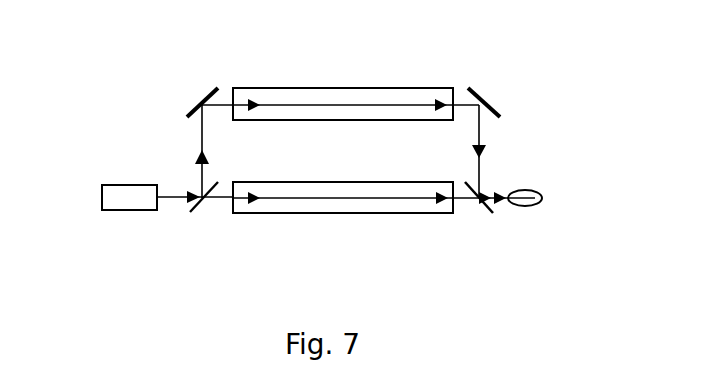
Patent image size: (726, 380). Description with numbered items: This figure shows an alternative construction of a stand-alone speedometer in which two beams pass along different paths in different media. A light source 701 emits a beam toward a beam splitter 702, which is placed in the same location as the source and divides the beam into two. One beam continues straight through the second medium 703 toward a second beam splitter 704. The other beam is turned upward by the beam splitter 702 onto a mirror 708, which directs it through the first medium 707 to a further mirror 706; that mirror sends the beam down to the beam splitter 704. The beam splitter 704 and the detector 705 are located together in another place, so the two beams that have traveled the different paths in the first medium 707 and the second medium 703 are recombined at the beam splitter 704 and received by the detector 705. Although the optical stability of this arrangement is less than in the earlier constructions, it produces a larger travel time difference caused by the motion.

The light source 701 is at (110, 192).
The beam splitter 702 is at (202, 195).
The second medium 703 is at (348, 213).
The beam splitter 704 is at (490, 215).
The detector 705 is at (537, 192).
The mirror 706 is at (480, 92).
The first medium 707 is at (418, 95).
The mirror 708 is at (210, 88).